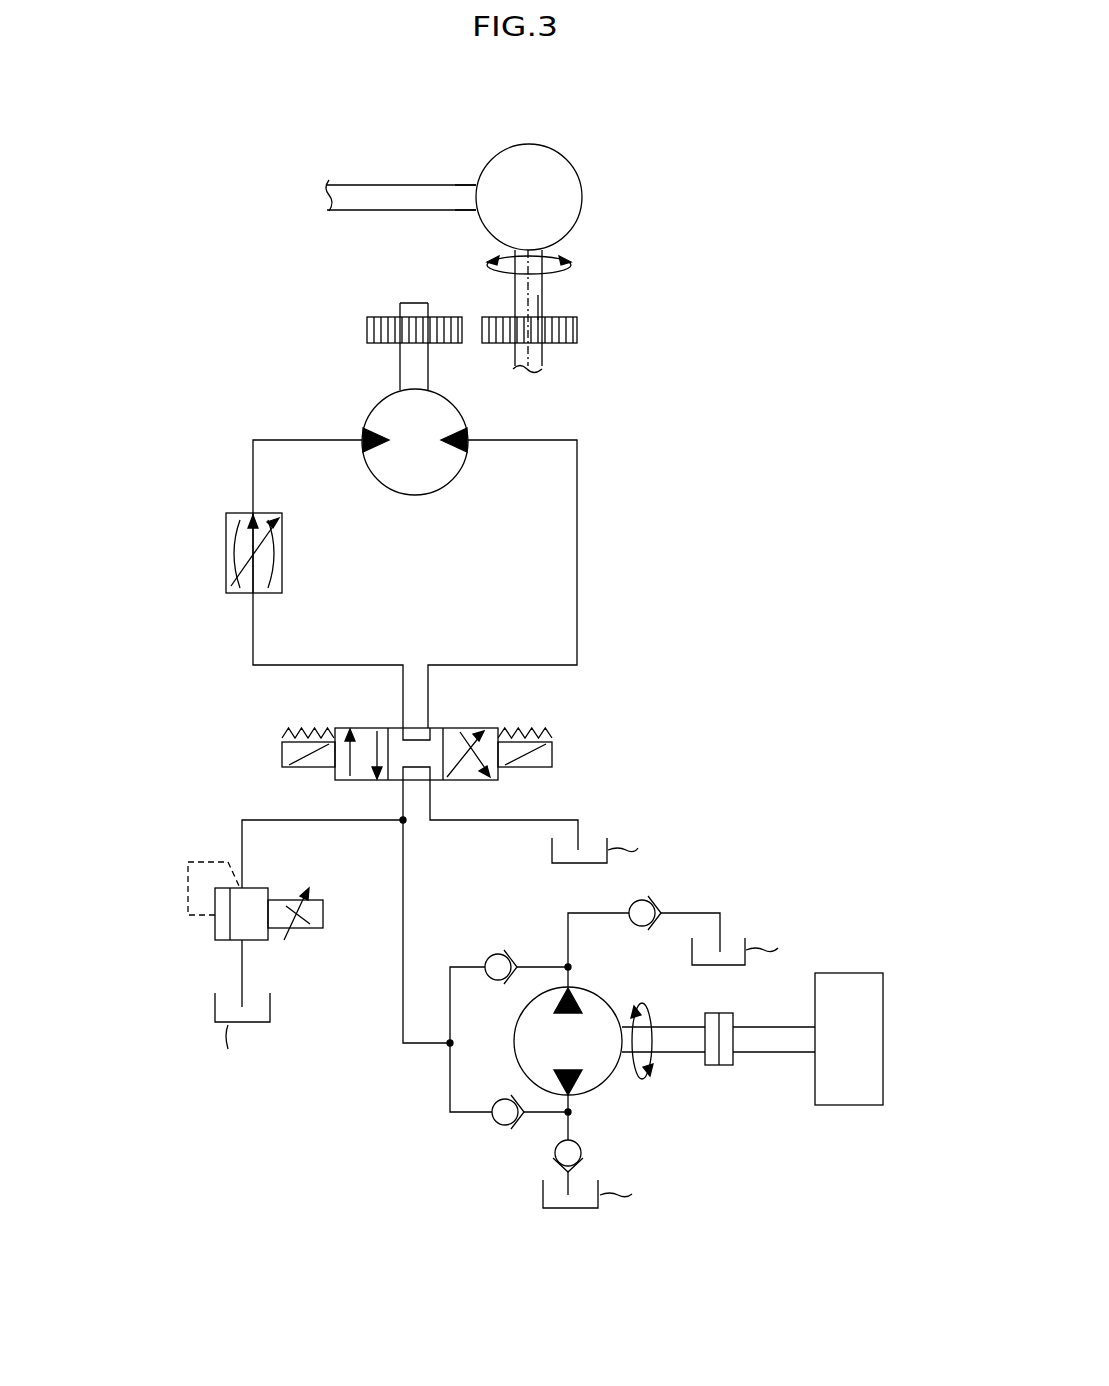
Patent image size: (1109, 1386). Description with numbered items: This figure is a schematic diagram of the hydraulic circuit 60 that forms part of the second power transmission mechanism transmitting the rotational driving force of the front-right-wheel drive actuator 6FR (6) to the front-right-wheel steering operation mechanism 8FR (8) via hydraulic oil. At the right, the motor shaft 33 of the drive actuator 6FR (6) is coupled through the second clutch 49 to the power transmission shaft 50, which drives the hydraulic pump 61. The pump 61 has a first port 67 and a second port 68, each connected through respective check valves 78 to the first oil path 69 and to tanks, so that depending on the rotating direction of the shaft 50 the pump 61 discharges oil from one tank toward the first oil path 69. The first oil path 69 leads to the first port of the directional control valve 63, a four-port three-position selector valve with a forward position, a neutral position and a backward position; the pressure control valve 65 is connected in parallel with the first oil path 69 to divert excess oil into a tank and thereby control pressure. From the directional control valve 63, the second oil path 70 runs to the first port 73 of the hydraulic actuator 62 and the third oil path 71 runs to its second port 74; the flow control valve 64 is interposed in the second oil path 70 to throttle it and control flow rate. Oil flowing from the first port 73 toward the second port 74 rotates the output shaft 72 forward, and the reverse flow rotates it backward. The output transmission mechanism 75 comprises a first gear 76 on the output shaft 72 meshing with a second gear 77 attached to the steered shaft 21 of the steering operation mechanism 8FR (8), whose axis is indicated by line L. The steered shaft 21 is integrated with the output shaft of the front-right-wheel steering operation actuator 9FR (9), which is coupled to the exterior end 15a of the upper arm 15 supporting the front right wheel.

The hydraulic circuit 60 is at (487, 1234).
The front-right-wheel steering operation actuator 9FR is at (533, 172).
The front-right-wheel steering operation actuator 9 is at (529, 150).
The upper arm 15 is at (346, 188).
The exterior end 15a is at (457, 197).
The front-right-wheel steering operation mechanism 8FR is at (576, 311).
The front-right-wheel steering operation mechanism 8 is at (543, 285).
The axis line L is at (527, 293).
The steered shaft 21 is at (541, 308).
The output transmission mechanism 75 is at (409, 340).
The first gear 76 is at (367, 326).
The second gear 77 is at (494, 344).
The output shaft 72 is at (410, 377).
The hydraulic actuator 62 is at (413, 468).
The first port 73 is at (360, 432).
The second port 74 is at (470, 432).
The second oil path 70 is at (253, 477).
The third oil path 71 is at (577, 488).
The flow control valve 64 is at (226, 553).
The directional control valve 63 is at (486, 727).
The pressure control valve 65 is at (260, 888).
The first oil path 69 is at (403, 870).
The hydraulic pump 61 is at (559, 1060).
The first port 67 is at (561, 1018).
The second port 68 is at (561, 1062).
The check valves 78 is at (510, 953).
The power transmission shaft 50 is at (678, 1053).
The second clutch 49 is at (723, 1067).
The motor shaft 33 is at (779, 1053).
The front-right-wheel drive actuator 6FR is at (863, 1070).
The front-right-wheel drive actuator 6 is at (850, 1106).